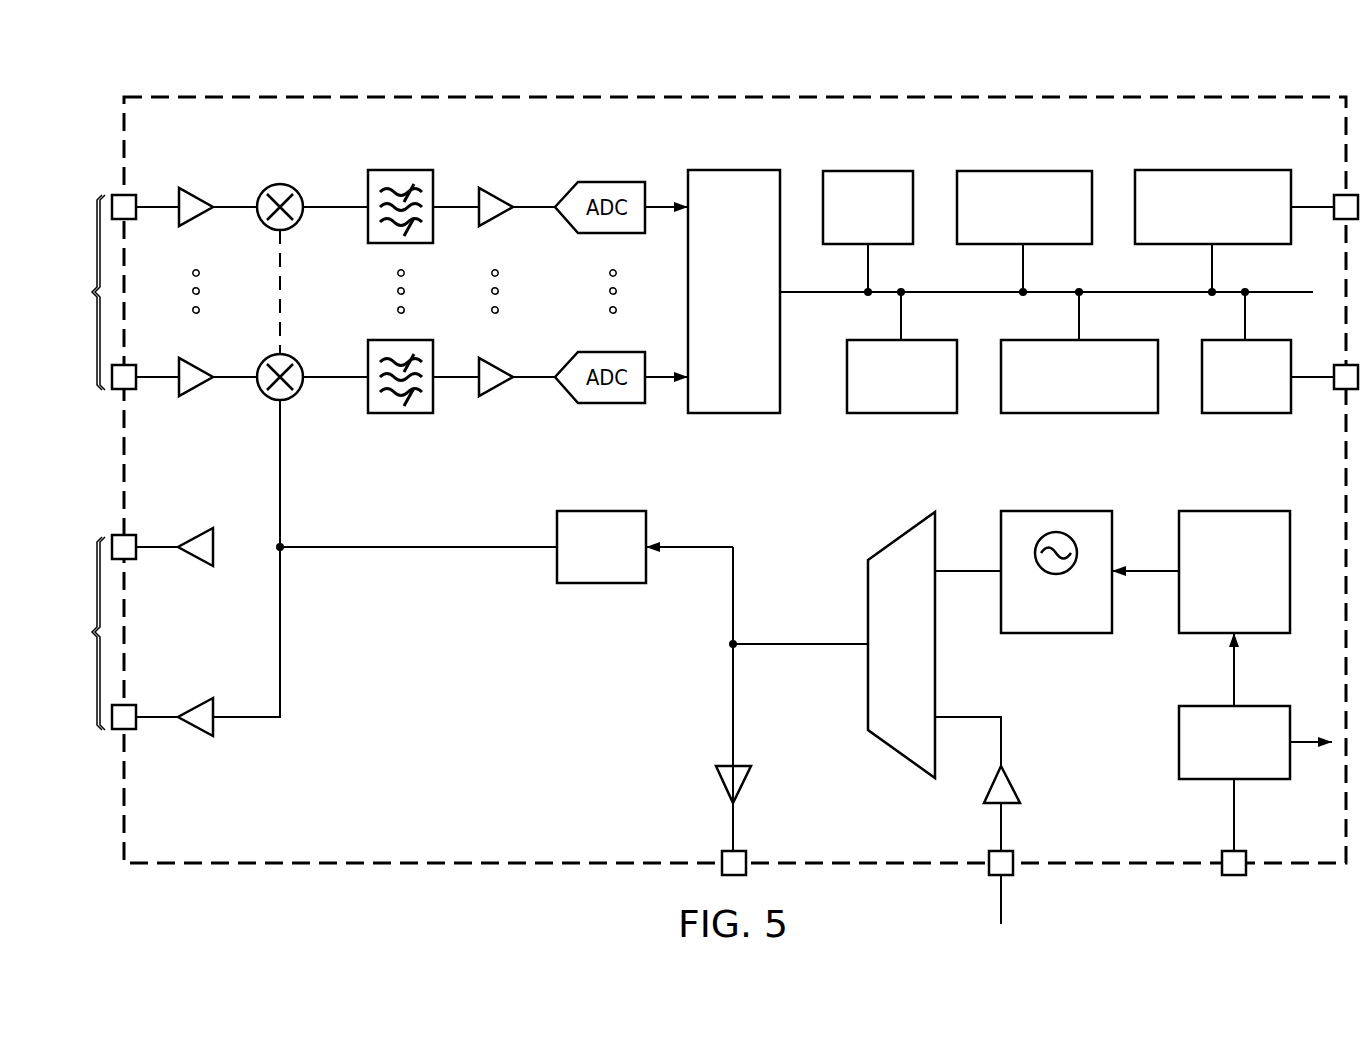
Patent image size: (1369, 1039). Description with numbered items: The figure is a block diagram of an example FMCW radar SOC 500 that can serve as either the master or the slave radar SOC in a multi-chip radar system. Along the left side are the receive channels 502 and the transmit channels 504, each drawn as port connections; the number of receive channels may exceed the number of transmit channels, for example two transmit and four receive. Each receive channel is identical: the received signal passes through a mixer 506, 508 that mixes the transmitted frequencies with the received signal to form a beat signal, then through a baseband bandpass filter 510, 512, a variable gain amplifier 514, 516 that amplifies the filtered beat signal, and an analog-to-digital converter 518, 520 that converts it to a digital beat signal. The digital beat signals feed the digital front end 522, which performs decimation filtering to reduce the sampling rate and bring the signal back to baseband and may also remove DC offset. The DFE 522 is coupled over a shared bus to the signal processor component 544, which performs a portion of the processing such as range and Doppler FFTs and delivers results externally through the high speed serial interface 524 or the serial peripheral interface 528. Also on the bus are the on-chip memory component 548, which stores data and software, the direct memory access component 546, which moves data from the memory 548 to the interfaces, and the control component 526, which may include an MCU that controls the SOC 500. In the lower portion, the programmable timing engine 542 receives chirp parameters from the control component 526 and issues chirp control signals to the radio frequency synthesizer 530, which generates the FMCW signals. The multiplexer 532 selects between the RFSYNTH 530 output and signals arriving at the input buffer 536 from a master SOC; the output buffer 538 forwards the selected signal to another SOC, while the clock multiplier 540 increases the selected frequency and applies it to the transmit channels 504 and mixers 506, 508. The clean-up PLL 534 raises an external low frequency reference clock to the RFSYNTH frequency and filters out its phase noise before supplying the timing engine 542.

The FMCW radar SOC 500 is at (710, 86).
The receive channels 502 is at (90, 292).
The transmit channels 504 is at (90, 632).
The mixer 506 is at (265, 191).
The mixer 508 is at (265, 361).
The baseband bandpass filter 510 is at (400, 170).
The baseband bandpass filter 512 is at (400, 413).
The variable gain amplifier 514 is at (501, 192).
The variable gain amplifier 516 is at (500, 396).
The analog-to-digital converter 518 is at (612, 182).
The analog-to-digital converter 520 is at (612, 403).
The digital front end 522 is at (712, 322).
The high speed serial interface 524 is at (1223, 170).
The control component 526 is at (910, 413).
The serial peripheral interface 528 is at (1258, 413).
The radio frequency synthesizer 530 is at (1055, 633).
The multiplexer 532 is at (935, 650).
The clean-up PLL 534 is at (1258, 779).
The input buffer 536 is at (1012, 784).
The output buffer 538 is at (722, 785).
The clock multiplier 540 is at (600, 583).
The programmable timing engine 542 is at (1258, 633).
The signal processor component 544 is at (1090, 413).
The direct memory access component 546 is at (880, 171).
The on-chip memory component 548 is at (1035, 171).